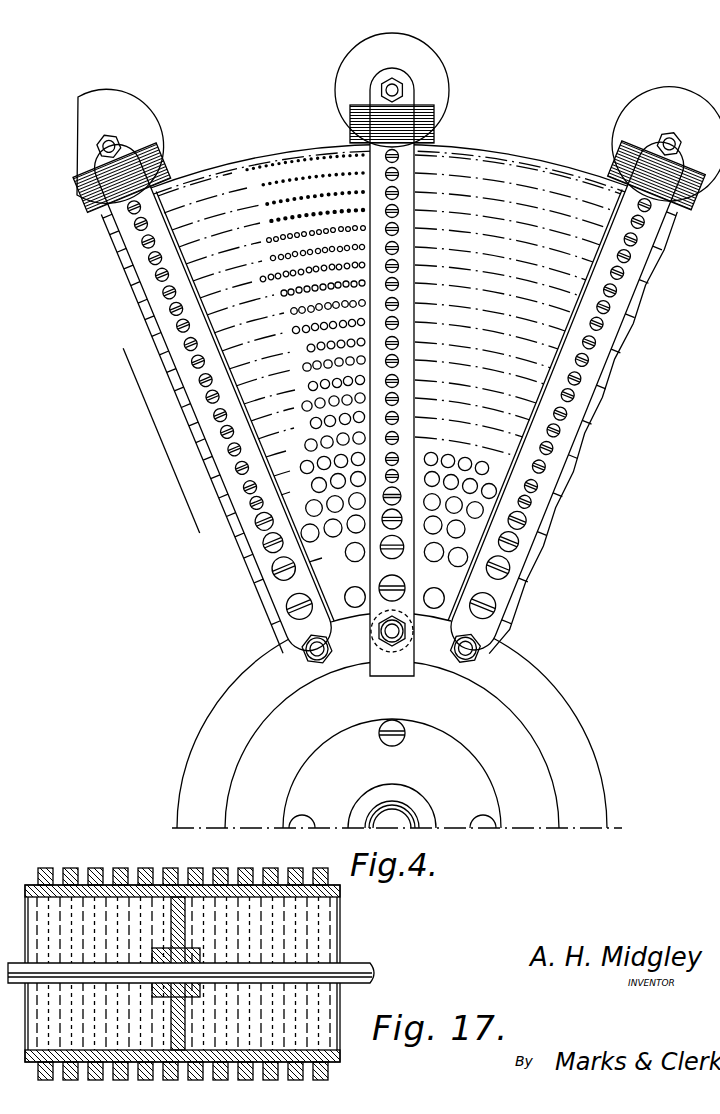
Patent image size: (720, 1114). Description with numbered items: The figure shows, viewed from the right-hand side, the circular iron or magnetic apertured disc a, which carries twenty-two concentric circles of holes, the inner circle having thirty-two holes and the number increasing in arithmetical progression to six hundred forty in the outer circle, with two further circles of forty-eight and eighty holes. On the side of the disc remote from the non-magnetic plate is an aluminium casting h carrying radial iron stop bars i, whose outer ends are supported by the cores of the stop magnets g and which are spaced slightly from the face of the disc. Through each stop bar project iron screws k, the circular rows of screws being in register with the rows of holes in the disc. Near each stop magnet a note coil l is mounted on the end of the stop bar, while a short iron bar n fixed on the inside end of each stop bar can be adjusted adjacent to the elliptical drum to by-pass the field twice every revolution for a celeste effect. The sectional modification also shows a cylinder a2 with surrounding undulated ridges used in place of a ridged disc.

In FIG. 4, the apertured disc a is at (533, 162).
In FIG. 4, the stop magnet g is at (148, 113).
In FIG. 4, the aluminium casting h is at (397, 720).
In FIG. 4, the stop bar i is at (262, 561).
In FIG. 4, the iron screws k is at (175, 312).
In FIG. 4, the note coil l is at (157, 150).
In FIG. 4, the short iron bar n is at (386, 663).
In FIG. 17, the cylinder a2 is at (130, 868).